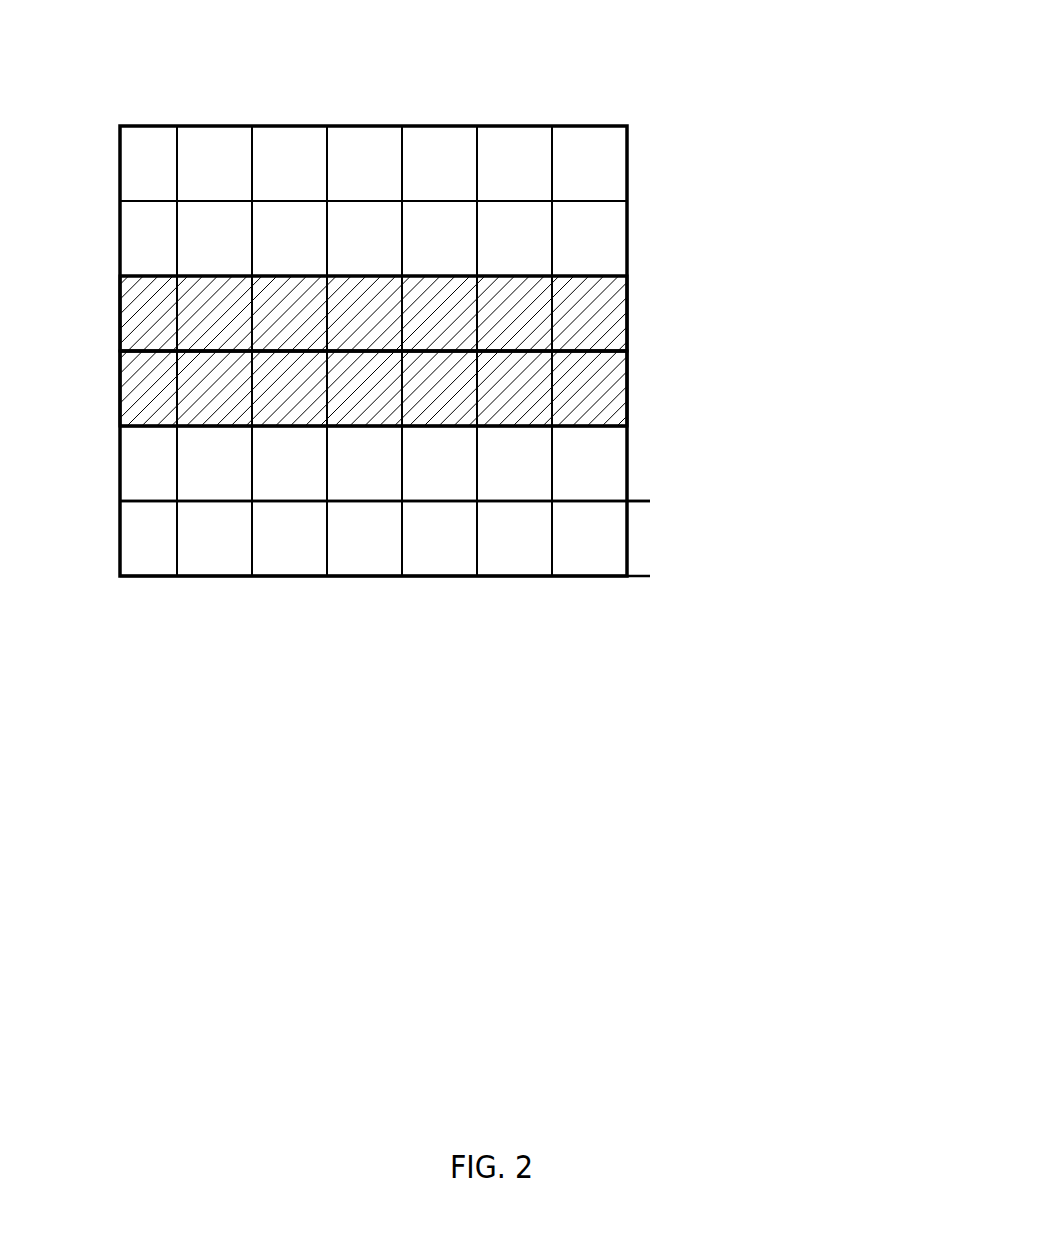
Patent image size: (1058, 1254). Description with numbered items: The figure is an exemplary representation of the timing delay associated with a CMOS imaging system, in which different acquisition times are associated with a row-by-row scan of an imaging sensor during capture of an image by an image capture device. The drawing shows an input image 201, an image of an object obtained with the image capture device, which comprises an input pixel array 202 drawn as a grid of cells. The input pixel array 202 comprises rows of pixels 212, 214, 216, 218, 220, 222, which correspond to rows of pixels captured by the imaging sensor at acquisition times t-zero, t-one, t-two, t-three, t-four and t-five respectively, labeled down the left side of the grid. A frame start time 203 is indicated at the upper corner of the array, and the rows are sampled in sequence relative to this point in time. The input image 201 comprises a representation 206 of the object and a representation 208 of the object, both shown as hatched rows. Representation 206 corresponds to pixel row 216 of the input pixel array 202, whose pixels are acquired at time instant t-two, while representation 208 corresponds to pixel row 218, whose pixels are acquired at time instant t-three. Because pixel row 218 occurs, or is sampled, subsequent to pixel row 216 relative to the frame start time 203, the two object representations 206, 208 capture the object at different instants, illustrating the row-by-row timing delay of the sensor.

The input image 201 is at (473, 343).
The input pixel array 202 is at (612, 63).
The frame start time 203 is at (121, 126).
The representation of the object 206 is at (590, 318).
The representation of the object 208 is at (590, 365).
The row of pixels 212 is at (228, 176).
The row of pixels 214 is at (228, 251).
The row of pixels 216 is at (228, 324).
The row of pixels 218 is at (228, 401).
The row of pixels 220 is at (228, 472).
The row of pixels 222 is at (228, 549).